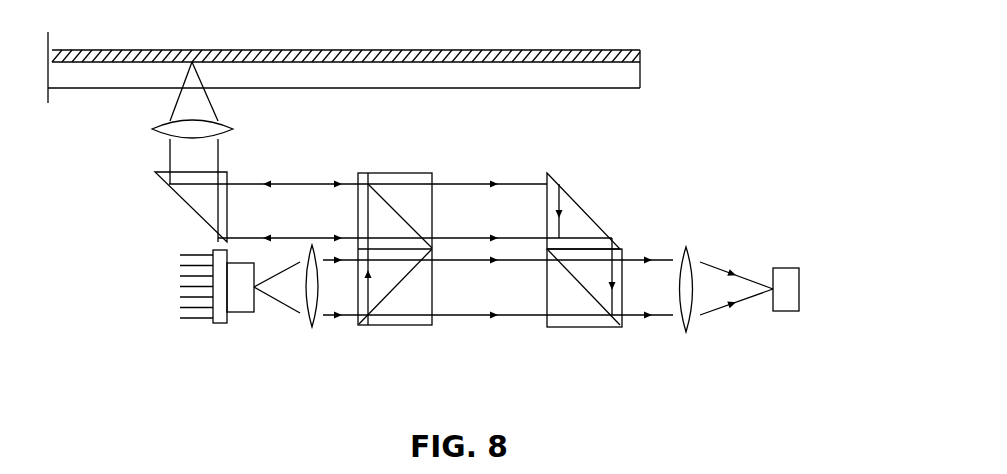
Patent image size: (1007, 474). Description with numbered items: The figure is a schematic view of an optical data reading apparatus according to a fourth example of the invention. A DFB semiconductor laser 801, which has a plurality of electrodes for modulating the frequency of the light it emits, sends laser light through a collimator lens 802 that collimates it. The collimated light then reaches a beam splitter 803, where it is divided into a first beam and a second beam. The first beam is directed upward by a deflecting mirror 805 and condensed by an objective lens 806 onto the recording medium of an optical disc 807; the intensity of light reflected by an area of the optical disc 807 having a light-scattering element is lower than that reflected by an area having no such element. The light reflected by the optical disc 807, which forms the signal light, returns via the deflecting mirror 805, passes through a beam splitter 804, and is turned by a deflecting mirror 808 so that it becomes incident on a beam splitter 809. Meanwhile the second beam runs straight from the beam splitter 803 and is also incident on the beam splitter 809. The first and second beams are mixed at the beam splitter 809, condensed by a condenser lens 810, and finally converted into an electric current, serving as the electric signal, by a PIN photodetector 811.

The DFB semiconductor laser 801 is at (220, 323).
The collimator lens 802 is at (312, 327).
The beam splitter 803 is at (410, 264).
The beam splitter 804 is at (385, 173).
The deflecting mirror 805 is at (183, 199).
The objective lens 806 is at (152, 128).
The optical disc 807 is at (618, 52).
The deflecting mirror 808 is at (582, 212).
The beam splitter 809 is at (585, 327).
The condenser lens 810 is at (686, 332).
The PIN photodetector 811 is at (799, 278).